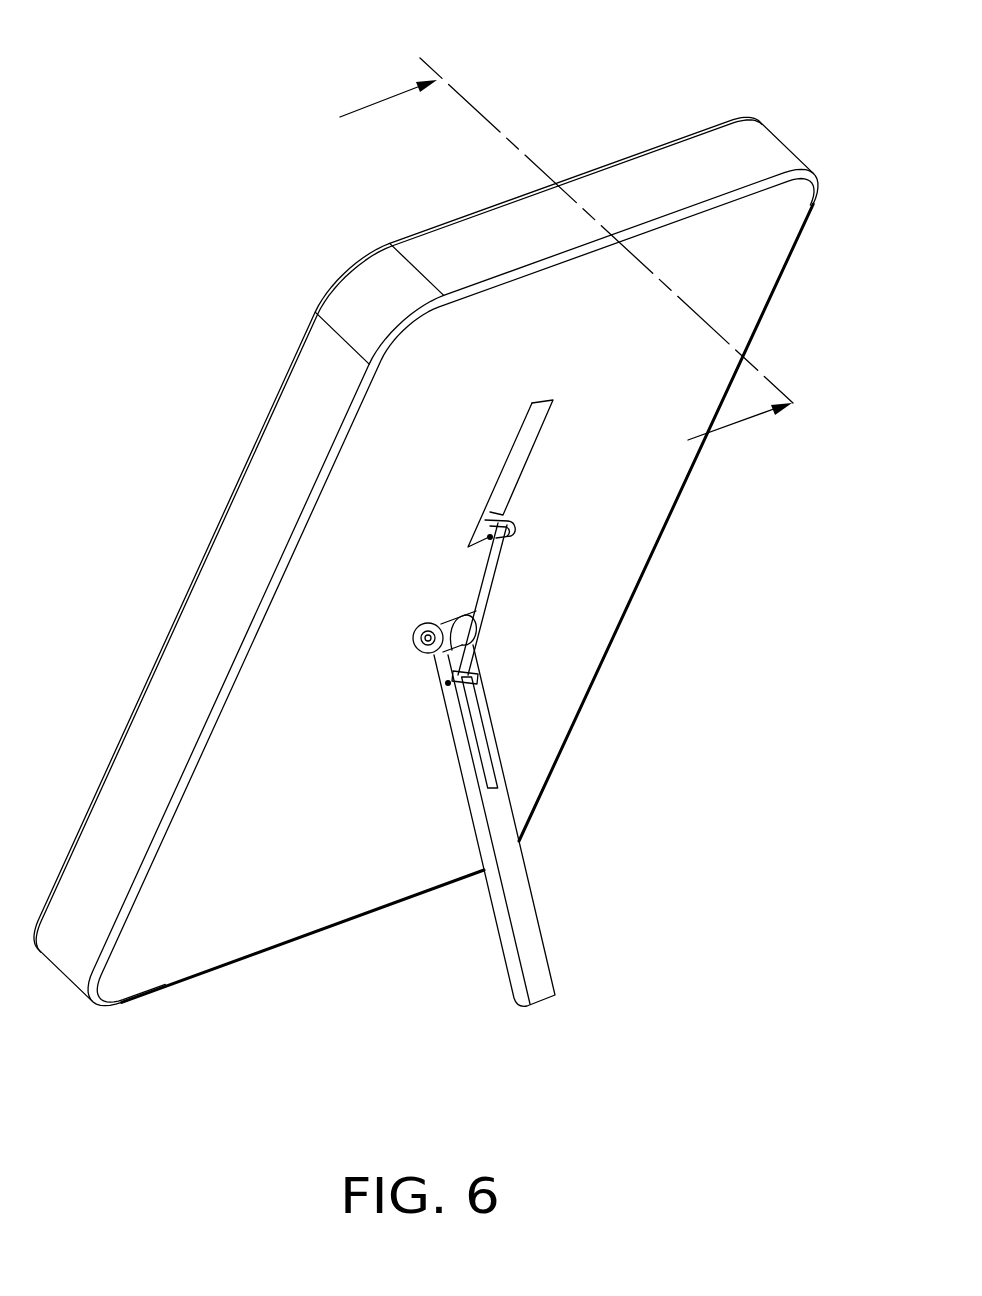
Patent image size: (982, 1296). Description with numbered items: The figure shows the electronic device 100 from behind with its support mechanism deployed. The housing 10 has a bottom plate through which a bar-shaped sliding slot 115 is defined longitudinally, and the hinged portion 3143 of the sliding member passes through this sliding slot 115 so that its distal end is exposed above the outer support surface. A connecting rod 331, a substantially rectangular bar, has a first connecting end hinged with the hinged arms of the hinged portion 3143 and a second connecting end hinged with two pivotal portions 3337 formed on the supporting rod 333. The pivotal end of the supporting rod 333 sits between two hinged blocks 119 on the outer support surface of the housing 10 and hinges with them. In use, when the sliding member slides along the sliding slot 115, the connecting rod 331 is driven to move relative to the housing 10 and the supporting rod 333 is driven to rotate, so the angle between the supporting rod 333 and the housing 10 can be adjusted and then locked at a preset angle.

The electronic device 100 is at (205, 65).
The housing 10 is at (223, 907).
The sliding slot 115 is at (520, 450).
The hinged portion 3143 is at (490, 513).
The connecting rod 331 is at (490, 588).
The hinged blocks 119 is at (420, 632).
The pivotal portions 3337 is at (480, 673).
The supporting rod 333 is at (500, 822).